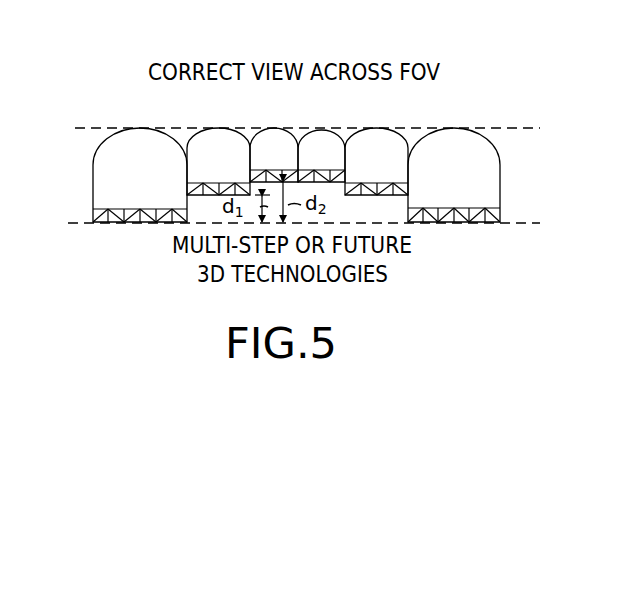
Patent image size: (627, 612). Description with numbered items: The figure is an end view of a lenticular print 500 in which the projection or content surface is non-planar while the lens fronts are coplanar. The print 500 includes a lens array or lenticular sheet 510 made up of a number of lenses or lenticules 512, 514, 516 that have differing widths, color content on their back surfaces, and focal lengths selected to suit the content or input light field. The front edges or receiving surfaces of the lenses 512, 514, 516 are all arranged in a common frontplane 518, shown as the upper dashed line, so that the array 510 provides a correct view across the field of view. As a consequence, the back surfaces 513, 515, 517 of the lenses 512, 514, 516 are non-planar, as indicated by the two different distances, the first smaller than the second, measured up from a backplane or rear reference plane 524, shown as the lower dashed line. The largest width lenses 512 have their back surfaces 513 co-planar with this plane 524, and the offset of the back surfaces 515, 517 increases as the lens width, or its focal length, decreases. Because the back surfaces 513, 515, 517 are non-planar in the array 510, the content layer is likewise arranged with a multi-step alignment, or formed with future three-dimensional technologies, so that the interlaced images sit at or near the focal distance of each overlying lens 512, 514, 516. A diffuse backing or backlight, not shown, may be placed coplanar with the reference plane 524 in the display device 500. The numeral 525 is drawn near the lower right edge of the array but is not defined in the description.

The lenticular print 500 is at (471, 96).
The lens array 510 is at (78, 163).
The lens 512 is at (158, 157).
The back surface 513 is at (99, 204).
The lens 514 is at (218, 140).
The back surface 515 is at (194, 181).
The lens 516 is at (277, 131).
The back surface 517 is at (250, 171).
The frontplane 518 is at (405, 125).
The rear reference plane 524 is at (508, 226).
The lens element edge / step 525 is at (526, 200).